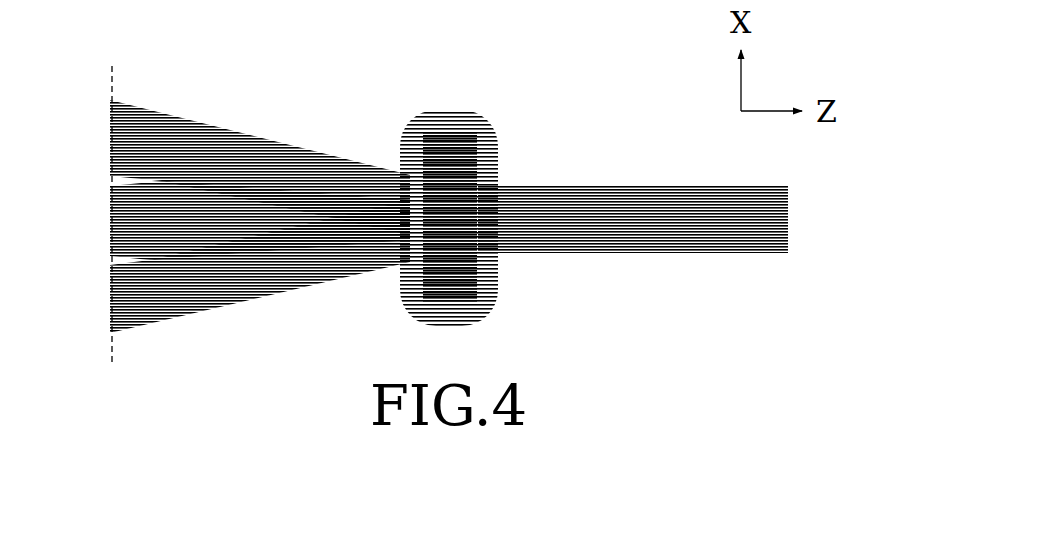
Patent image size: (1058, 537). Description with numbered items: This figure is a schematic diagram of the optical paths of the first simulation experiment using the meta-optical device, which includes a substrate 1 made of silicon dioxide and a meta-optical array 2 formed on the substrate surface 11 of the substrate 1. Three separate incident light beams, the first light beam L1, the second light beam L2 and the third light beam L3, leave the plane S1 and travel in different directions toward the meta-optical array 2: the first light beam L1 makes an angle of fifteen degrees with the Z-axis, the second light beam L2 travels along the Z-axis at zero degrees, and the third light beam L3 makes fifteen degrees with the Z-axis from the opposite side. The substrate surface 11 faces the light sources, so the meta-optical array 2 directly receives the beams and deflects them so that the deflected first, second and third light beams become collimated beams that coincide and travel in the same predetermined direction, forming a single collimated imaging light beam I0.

The plane S1 is at (116, 197).
The first light beam L1 is at (193, 114).
The second light beam L2 is at (104, 185).
The third light beam L3 is at (257, 305).
The substrate surface 11 is at (425, 148).
The meta-optical array 2 is at (446, 174).
The substrate 1 is at (454, 128).
The collimated imaging light beam I0 is at (584, 177).